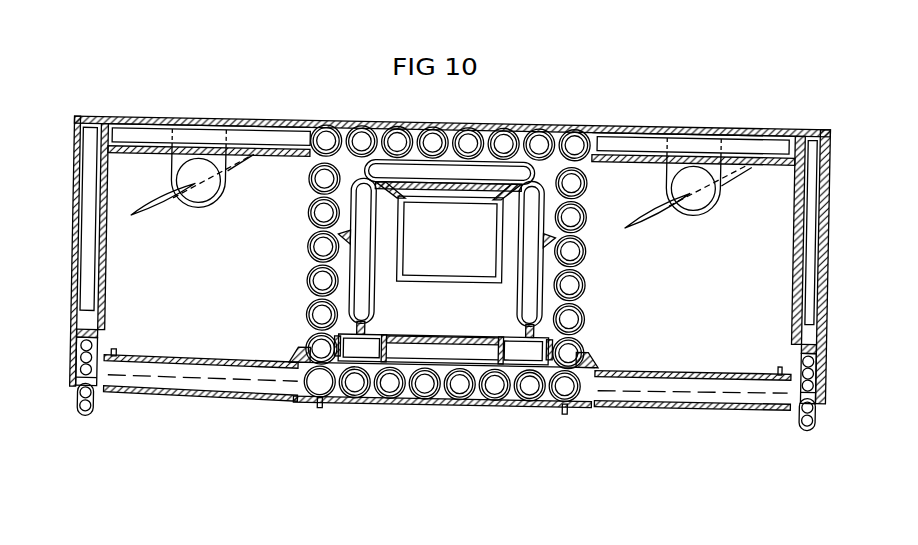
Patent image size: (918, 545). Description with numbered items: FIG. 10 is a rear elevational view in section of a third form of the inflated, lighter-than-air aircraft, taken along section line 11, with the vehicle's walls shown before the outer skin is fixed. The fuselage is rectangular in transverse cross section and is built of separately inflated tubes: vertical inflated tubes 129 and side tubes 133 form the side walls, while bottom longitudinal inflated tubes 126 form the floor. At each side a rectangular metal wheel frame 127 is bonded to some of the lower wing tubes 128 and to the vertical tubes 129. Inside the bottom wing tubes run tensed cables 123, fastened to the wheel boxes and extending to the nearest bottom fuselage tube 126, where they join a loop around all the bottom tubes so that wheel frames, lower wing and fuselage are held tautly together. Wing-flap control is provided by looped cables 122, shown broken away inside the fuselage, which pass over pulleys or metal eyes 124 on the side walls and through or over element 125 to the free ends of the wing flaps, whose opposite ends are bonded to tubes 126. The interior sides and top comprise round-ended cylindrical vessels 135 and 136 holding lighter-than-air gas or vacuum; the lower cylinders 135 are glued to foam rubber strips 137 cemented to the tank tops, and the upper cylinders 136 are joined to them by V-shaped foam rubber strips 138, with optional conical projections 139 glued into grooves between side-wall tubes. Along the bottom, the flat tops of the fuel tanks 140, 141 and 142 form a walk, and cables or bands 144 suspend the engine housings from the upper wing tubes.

The section line 11- 11 is at (433, 123).
The looped cables 122 is at (375, 330).
The cables 123 is at (161, 381).
The pulleys or metal eyes 124 is at (596, 361).
The element 125 is at (568, 412).
The bottom longitudinal inflated tube 126 is at (320, 387).
The wheel frame 127 is at (73, 343).
The lower wing tubes 128 is at (175, 399).
The vertical inflated tubes 129 is at (73, 293).
The side tubes 133 is at (586, 280).
The lower cylindrical vessels 135 is at (533, 297).
The upper cylindrical vessels 136 is at (449, 172).
The foam rubber strips 137 is at (535, 330).
The V-shaped foam rubber strips 138 is at (500, 198).
The conical foam rubber projections 139 is at (346, 243).
The auxiliary reserve fuel tanks 140 is at (379, 358).
The main fuel tank 141 is at (462, 359).
The reserve fuel tanks 142 is at (541, 358).
The cables or bands 144 is at (171, 170).